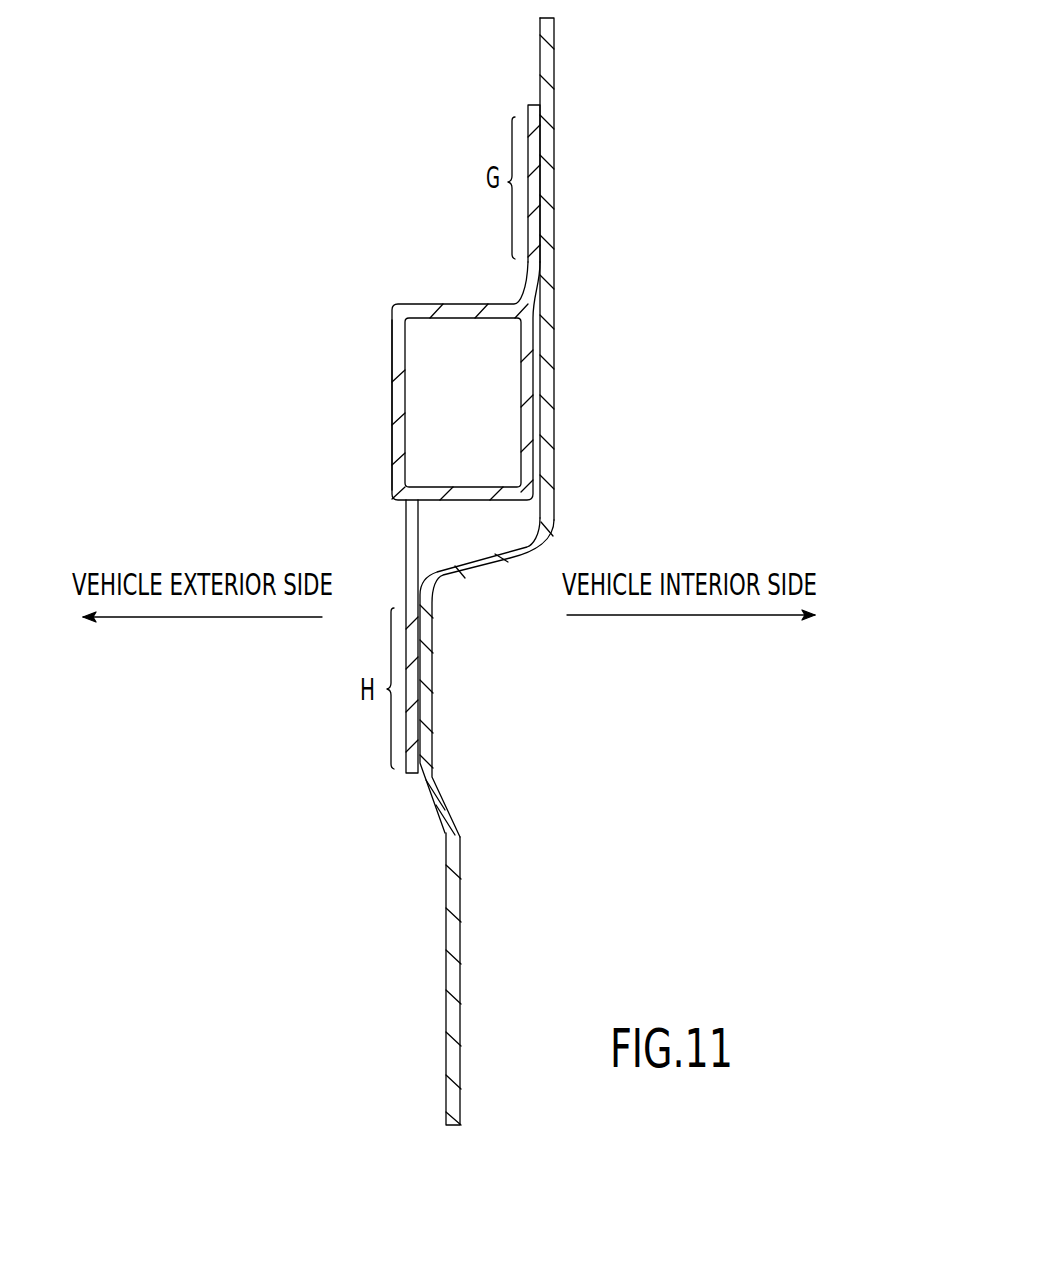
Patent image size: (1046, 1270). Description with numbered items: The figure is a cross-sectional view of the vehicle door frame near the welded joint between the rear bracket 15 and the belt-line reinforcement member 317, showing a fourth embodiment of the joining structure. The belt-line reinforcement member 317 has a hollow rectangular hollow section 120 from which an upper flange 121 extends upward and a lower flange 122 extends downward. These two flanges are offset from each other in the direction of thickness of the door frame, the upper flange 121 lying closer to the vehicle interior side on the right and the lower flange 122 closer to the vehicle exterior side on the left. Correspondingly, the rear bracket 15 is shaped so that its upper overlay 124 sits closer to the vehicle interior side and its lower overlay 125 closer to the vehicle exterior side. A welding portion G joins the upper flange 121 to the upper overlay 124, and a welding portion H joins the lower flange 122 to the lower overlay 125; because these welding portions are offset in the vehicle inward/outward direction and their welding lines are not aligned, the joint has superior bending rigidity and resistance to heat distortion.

The upper overlay 124 is at (550, 77).
The upper flange 121 is at (538, 107).
The hollow rectangular hollow section 120 is at (392, 334).
The belt-line reinforcement member 317 is at (377, 490).
The lower overlay 125 is at (432, 712).
The lower flange 122 is at (405, 773).
The rear bracket 15 is at (467, 952).